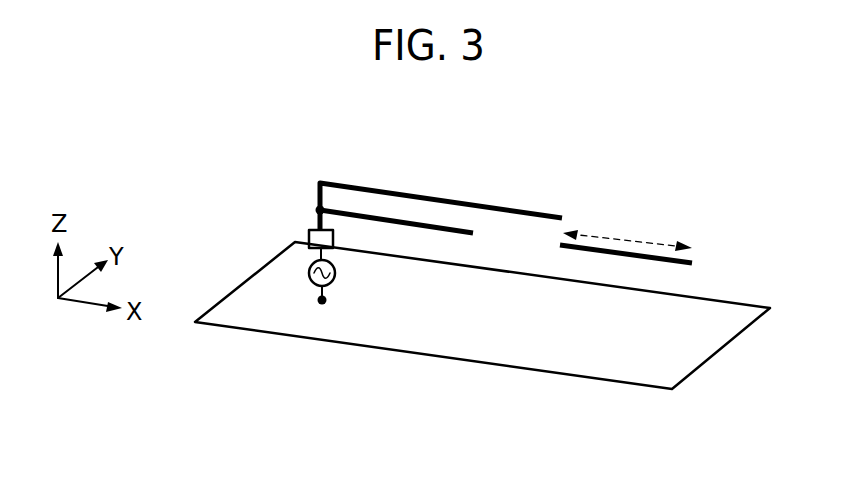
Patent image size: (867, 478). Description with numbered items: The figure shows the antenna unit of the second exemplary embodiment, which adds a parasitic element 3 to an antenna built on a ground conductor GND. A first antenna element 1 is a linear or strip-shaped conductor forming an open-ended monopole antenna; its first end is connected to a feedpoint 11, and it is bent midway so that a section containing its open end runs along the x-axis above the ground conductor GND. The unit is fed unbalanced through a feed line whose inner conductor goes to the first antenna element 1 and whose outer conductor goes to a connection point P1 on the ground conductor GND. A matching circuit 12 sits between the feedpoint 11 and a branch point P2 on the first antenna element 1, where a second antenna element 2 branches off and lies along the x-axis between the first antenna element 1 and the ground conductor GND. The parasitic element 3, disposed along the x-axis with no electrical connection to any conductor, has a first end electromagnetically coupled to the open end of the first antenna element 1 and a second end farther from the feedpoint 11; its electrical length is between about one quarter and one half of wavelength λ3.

The first antenna element 1 is at (343, 183).
The second antenna element 2 is at (452, 227).
The parasitic element 3 is at (625, 255).
The feedpoint 11 is at (308, 274).
The matching circuit 12 is at (307, 234).
The connection point P1 is at (322, 305).
The branch point P2 is at (317, 211).
The ground conductor GND is at (605, 360).